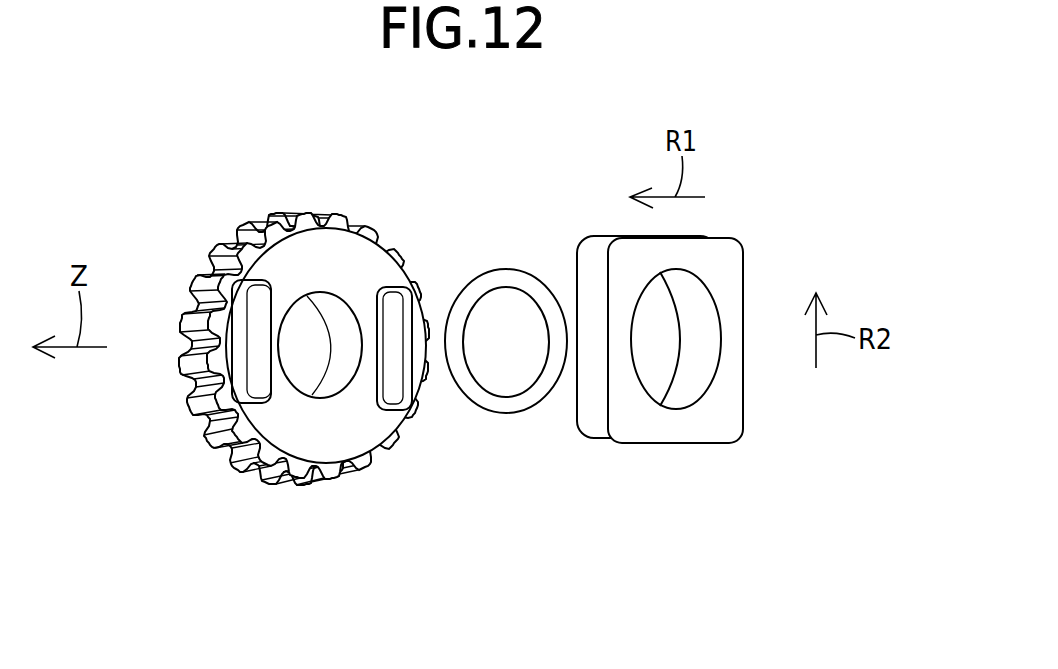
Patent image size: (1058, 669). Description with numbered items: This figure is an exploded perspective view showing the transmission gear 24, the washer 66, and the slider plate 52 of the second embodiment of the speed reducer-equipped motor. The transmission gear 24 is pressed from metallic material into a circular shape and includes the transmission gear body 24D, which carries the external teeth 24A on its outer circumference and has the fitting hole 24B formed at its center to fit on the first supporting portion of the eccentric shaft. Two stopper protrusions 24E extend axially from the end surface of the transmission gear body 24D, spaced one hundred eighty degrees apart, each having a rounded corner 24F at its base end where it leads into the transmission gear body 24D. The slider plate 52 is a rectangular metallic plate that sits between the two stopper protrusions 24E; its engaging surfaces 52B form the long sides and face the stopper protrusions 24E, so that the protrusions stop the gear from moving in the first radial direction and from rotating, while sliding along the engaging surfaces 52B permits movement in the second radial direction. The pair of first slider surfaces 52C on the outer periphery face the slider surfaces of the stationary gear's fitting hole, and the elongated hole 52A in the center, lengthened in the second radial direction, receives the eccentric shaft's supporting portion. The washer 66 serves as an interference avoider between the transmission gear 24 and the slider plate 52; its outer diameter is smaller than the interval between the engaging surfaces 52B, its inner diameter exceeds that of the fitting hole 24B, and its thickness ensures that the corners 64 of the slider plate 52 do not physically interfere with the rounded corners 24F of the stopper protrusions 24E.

The transmission gear 24 is at (300, 359).
The external teeth 24A is at (283, 223).
The fitting hole 24B is at (337, 313).
The transmission gear body 24D is at (267, 267).
The stopper protrusions 24E is at (253, 340).
The rounded corner 24F is at (384, 358).
The slider plate 52 is at (702, 332).
The elongated hole 52A is at (706, 308).
The engaging surfaces 52B is at (594, 377).
The first slider surfaces 52C is at (682, 444).
The corners 64 is at (577, 285).
The washer 66 is at (505, 412).